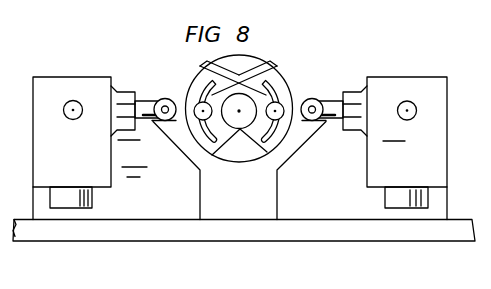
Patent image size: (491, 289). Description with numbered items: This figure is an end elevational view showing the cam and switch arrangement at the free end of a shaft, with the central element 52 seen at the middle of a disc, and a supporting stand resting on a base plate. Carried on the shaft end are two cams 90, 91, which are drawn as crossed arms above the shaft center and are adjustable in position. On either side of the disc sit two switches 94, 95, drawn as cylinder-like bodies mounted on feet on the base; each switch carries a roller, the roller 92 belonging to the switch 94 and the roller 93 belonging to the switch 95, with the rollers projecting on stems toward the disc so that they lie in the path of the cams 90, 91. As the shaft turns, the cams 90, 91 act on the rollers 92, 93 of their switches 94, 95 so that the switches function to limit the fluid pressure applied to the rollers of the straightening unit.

The shaft 52 is at (239, 113).
The cam 90 is at (200, 70).
The cam 91 is at (276, 68).
The roller 92 is at (161, 98).
The roller 93 is at (312, 98).
The switch 94 is at (73, 84).
The switch 95 is at (397, 88).